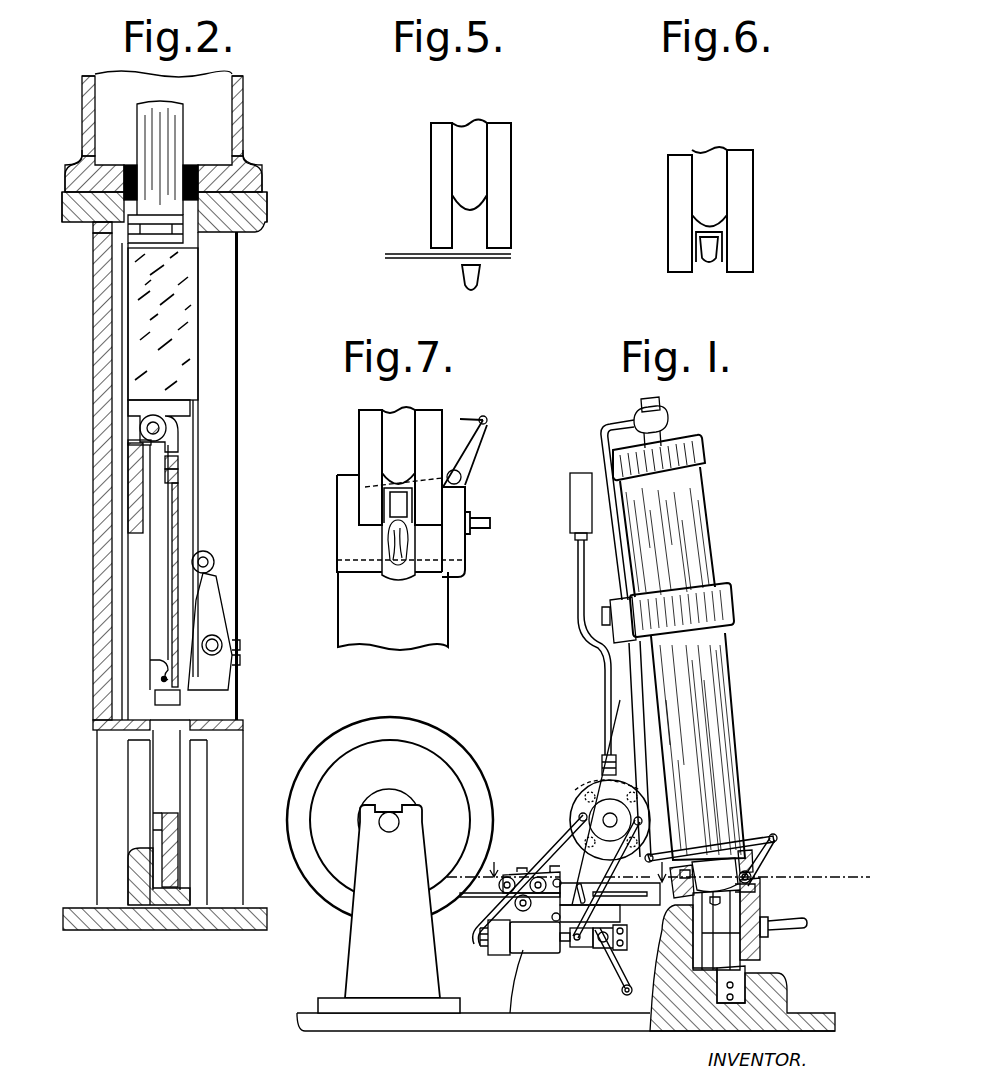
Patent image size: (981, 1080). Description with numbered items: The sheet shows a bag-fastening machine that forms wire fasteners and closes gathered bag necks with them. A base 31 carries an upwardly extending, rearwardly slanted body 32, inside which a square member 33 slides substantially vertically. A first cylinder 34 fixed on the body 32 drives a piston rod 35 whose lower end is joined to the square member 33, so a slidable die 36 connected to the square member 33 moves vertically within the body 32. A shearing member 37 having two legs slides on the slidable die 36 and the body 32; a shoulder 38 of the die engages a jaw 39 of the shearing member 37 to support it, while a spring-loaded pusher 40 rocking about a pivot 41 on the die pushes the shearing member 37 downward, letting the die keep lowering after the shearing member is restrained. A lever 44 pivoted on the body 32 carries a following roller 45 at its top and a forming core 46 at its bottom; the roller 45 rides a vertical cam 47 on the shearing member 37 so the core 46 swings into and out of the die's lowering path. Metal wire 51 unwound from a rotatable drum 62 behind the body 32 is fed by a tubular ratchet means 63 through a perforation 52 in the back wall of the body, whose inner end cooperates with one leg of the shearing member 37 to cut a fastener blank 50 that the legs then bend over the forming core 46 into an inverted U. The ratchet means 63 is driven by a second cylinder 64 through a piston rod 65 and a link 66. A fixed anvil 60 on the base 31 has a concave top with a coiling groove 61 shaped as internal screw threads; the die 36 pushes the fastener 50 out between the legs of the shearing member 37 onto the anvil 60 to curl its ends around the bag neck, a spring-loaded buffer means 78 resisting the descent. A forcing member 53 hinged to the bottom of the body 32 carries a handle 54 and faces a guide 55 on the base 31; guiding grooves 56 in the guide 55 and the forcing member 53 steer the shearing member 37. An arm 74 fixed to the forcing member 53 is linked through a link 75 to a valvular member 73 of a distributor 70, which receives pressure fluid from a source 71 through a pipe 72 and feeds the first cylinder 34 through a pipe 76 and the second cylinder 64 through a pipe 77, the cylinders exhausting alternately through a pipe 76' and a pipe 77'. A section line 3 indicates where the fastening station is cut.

In FIG. 1, the section line 3- 3 is at (658, 864).
In FIG. 2, the base 31 is at (125, 878).
In FIG. 1, the base 31 is at (790, 1005).
In FIG. 2, the body 32 is at (228, 363).
In FIG. 1, the body 32 is at (720, 710).
In FIG. 2, the square member 33 is at (195, 332).
In FIG. 2, the first cylinder 34 is at (245, 100).
In FIG. 1, the first cylinder 34 is at (698, 527).
In FIG. 2, the piston rod 35 is at (178, 150).
In FIG. 2, the slidable die 36 is at (158, 578).
In FIG. 5, the slidable die 36 is at (482, 191).
In FIG. 6, the slidable die 36 is at (722, 214).
In FIG. 7, the slidable die 36 is at (411, 456).
In FIG. 1, the slidable die 36 is at (712, 862).
In FIG. 2, the shearing member 37 is at (158, 665).
In FIG. 5, the shearing member 37 is at (512, 180).
In FIG. 6, the shearing member 37 is at (758, 215).
In FIG. 7, the shearing member 37 is at (447, 440).
In FIG. 1, the shearing member 37 is at (735, 862).
In FIG. 2, the shoulder 38 is at (180, 482).
In FIG. 2, the jaw 39 is at (180, 462).
In FIG. 2, the spring-loaded pusher 40 is at (176, 430).
In FIG. 2, the pivot 41 is at (153, 422).
In FIG. 2, the lever 44 is at (210, 600).
In FIG. 2, the following roller 45 is at (214, 560).
In FIG. 2, the forming core 46 is at (172, 696).
In FIG. 5, the forming core 46 is at (482, 280).
In FIG. 6, the forming core 46 is at (708, 265).
In FIG. 2, the vertical cam 47 is at (180, 545).
In FIG. 6, the fastener blank 50 is at (697, 252).
In FIG. 5, the metal wire 51 is at (428, 258).
In FIG. 1, the metal wire 51 is at (470, 905).
In FIG. 2, the perforation 52 is at (162, 682).
In FIG. 1, the perforation 52 is at (688, 872).
In FIG. 7, the forcing member 53 is at (462, 500).
In FIG. 1, the forcing member 53 is at (762, 952).
In FIG. 7, the handle 54 is at (490, 522).
In FIG. 1, the handle 54 is at (790, 918).
In FIG. 2, the guide 55 is at (190, 778).
In FIG. 7, the guide 55 is at (345, 512).
In FIG. 1, the guiding groove 56 is at (603, 906).
In FIG. 2, the fixed anvil 60 is at (178, 826).
In FIG. 7, the fixed anvil 60 is at (402, 621).
In FIG. 1, the fixed anvil 60 is at (745, 970).
In FIG. 2, the coiling groove 61 is at (160, 815).
In FIG. 1, the rotatable drum 62 is at (453, 730).
In FIG. 1, the ratchet means 63 is at (627, 947).
In FIG. 1, the second cylinder 64 is at (547, 950).
In FIG. 1, the piston rod 65 is at (578, 945).
In FIG. 1, the link 66 is at (593, 950).
In FIG. 1, the distributor 70 is at (600, 798).
In FIG. 1, the source 71 is at (578, 500).
In FIG. 1, the pipe 72 is at (605, 665).
In FIG. 1, the valvular member 73 is at (603, 782).
In FIG. 7, the arm 74 is at (482, 445).
In FIG. 1, the arm 74 is at (770, 850).
In FIG. 1, the link 75 is at (703, 853).
In FIG. 1, the pipe 76 is at (593, 531).
In FIG. 1, the pipe 76' is at (704, 742).
In FIG. 1, the pipe 77 is at (530, 877).
In FIG. 1, the pipe 77' is at (576, 877).
In FIG. 7, the spring-loaded buffer means 78 is at (462, 567).